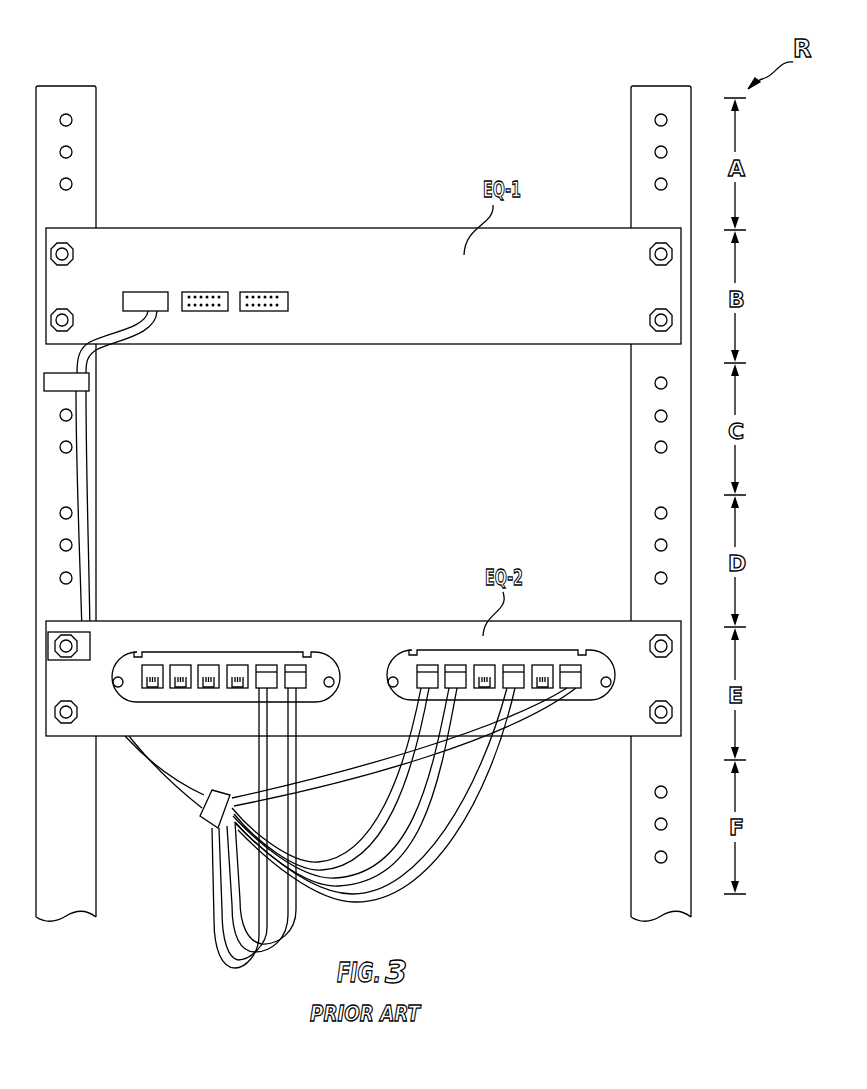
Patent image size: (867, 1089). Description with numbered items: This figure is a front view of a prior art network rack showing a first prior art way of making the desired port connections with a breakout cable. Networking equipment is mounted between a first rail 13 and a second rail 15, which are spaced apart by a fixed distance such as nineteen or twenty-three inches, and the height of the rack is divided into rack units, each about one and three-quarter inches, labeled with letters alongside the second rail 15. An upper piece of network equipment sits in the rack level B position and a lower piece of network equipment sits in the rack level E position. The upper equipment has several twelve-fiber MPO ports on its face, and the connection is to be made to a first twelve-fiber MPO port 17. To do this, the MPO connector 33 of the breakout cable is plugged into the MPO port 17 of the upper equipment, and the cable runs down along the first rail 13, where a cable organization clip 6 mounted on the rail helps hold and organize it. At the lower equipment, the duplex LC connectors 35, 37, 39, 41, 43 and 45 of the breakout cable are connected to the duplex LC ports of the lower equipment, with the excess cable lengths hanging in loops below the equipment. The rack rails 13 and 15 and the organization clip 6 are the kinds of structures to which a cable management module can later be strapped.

The first rail 13 is at (66, 98).
The second rail 15 is at (661, 98).
The MPO port 17 is at (150, 278).
The MPO connector 33 is at (161, 294).
The cable organization clip 6 is at (90, 381).
The duplex LC connector 35 is at (258, 699).
The duplex LC connector 37 is at (318, 690).
The duplex LC connector 39 is at (416, 680).
The duplex LC connector 41 is at (452, 678).
The duplex LC connector 43 is at (518, 678).
The duplex LC connector 45 is at (582, 700).